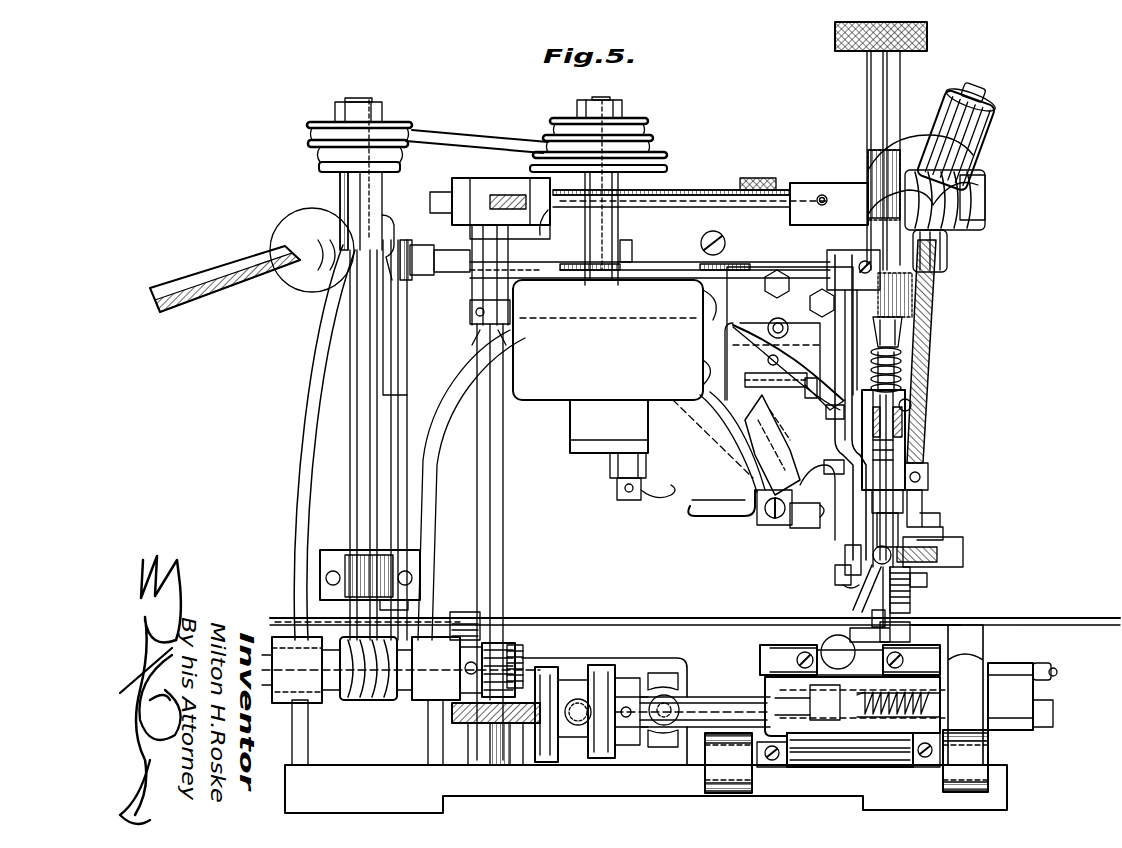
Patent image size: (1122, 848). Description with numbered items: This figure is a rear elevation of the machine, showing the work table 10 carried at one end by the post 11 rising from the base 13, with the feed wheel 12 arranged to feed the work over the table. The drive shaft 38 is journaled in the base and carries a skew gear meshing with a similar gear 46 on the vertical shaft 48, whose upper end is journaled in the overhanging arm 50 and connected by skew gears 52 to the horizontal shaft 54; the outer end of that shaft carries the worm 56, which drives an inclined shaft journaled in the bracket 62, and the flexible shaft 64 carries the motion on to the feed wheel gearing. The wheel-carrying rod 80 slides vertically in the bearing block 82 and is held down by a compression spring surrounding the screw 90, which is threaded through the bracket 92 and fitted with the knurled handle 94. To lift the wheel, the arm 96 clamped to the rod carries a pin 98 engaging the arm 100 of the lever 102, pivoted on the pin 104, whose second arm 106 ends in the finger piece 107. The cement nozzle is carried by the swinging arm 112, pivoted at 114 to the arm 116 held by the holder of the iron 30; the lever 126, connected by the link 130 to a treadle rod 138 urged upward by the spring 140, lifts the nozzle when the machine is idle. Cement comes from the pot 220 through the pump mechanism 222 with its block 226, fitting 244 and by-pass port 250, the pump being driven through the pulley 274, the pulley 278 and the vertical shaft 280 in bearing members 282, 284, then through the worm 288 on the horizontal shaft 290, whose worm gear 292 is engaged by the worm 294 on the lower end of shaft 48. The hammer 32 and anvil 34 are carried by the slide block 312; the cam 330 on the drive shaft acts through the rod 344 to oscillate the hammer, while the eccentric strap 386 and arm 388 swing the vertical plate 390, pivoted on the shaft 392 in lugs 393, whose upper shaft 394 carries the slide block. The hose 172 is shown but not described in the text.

The work table 10 is at (1048, 620).
The post 11 is at (985, 648).
The feed wheel 12 is at (912, 608).
The base 13 is at (345, 778).
The iron 30 is at (850, 582).
The hammer 32 is at (875, 610).
The anvil 34 is at (855, 632).
The drive shaft 38 is at (725, 707).
The skew gear 46 is at (465, 735).
The vertical shaft 48 is at (503, 527).
The overhanging arm 50 is at (462, 370).
The skew gears 52 is at (510, 218).
The horizontal shaft 54 is at (683, 190).
The worm 56 is at (960, 227).
The bracket 62 is at (978, 152).
The flexible shaft 64 is at (853, 328).
The rod 80 is at (920, 422).
The bearing block 82 is at (918, 412).
The screw 90 is at (894, 92).
The bracket 92 is at (930, 292).
The knurled handle 94 is at (930, 34).
The arm 96 is at (912, 405).
The pin 98 is at (900, 373).
The arm 100 is at (836, 405).
The lever 102 is at (770, 375).
The pin 104 is at (733, 440).
The arm 106 is at (745, 505).
The finger piece 107 is at (686, 508).
The swinging arm 112 is at (847, 574).
The pivot 114 is at (770, 528).
The arm 116 is at (795, 530).
The lever 126 is at (790, 496).
The link 130 is at (855, 350).
The rod 138 is at (396, 455).
The spring 140 is at (412, 608).
The hose 172 is at (180, 305).
The cement pot 220 is at (533, 398).
The pump mechanism 222 is at (557, 436).
The block 226 is at (640, 430).
The fitting 244 is at (640, 464).
The port 250 is at (655, 493).
The pulley 274 is at (652, 134).
The pulley 278 is at (338, 120).
The vertical shaft 280 is at (352, 432).
The bearing member 282 is at (340, 223).
The bearing member 284 is at (323, 560).
The worm 288 is at (355, 700).
The horizontal shaft 290 is at (315, 632).
The worm gear 292 is at (508, 632).
The worm 294 is at (512, 672).
The slide block 312 is at (912, 645).
The cam 330 is at (596, 662).
The rod 344 is at (687, 732).
The eccentric strap 386 is at (1056, 675).
The arm 388 is at (1036, 702).
The vertical plate 390 is at (770, 672).
The shaft 392 is at (868, 760).
The lugs 393 is at (1000, 758).
The shaft 394 is at (880, 720).